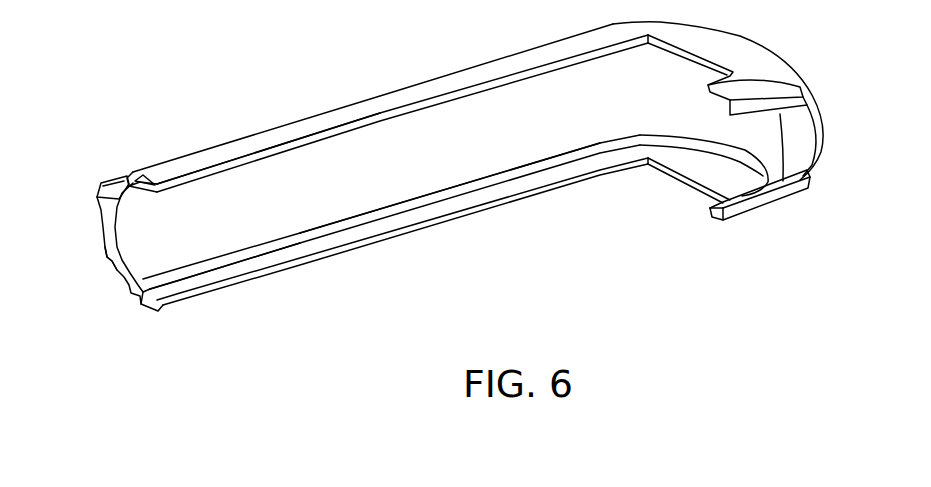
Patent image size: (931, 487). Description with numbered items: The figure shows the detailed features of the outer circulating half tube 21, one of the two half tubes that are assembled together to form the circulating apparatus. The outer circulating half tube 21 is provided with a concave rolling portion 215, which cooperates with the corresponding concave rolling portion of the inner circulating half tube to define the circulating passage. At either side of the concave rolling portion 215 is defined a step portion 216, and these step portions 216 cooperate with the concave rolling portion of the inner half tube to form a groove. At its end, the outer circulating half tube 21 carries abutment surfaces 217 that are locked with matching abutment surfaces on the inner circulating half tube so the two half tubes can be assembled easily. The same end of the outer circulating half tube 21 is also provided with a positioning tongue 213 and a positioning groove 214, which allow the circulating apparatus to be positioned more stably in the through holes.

The outer circulating half tube 21 is at (477, 72).
The positioning tongue 213 is at (100, 184).
The positioning groove 214 is at (116, 264).
The concave rolling portion 215 is at (447, 138).
The step portion 216 is at (150, 188).
The abutment surface 217 is at (712, 170).